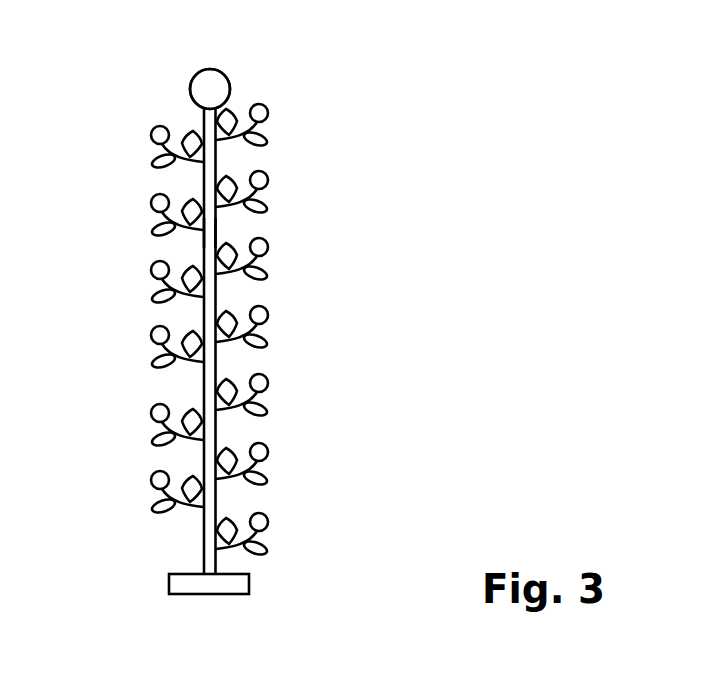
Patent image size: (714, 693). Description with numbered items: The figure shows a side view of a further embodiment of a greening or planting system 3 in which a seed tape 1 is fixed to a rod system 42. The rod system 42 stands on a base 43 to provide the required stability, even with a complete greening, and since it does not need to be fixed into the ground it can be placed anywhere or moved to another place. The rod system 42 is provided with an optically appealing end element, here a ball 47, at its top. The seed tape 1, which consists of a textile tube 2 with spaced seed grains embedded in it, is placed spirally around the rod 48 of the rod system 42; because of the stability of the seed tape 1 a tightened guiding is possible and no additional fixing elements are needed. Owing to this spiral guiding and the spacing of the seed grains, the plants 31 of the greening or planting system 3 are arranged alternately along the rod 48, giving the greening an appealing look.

The seed tape 1 is at (231, 309).
The textile tube 2 is at (203, 257).
The greening or planting system 3 is at (240, 301).
The plants 31 is at (268, 203).
The rod system 42 is at (169, 80).
The base 43 is at (200, 583).
The ball 47 is at (208, 85).
The rod 48 is at (215, 231).